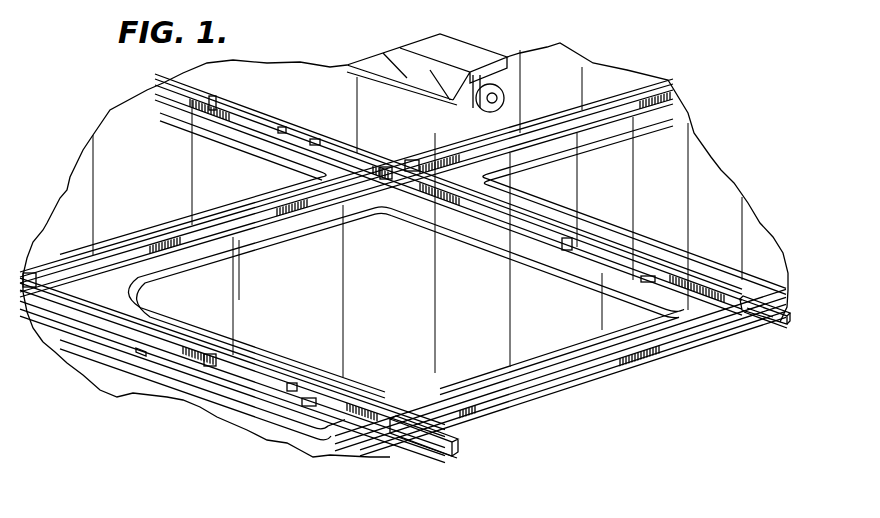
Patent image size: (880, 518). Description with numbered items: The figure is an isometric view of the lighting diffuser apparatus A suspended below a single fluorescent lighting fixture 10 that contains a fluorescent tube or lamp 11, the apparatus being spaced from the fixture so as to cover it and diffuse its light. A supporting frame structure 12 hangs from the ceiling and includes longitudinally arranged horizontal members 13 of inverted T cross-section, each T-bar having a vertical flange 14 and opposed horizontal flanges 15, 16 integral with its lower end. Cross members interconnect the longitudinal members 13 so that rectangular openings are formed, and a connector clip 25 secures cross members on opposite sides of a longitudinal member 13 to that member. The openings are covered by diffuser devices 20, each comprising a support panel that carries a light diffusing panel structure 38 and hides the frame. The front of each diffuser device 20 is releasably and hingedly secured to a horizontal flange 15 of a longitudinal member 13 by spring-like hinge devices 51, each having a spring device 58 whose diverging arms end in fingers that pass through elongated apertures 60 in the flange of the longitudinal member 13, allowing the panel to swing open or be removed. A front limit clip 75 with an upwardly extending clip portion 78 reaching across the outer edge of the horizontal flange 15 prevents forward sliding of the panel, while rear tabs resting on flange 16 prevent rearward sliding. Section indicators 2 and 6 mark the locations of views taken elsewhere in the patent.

The lighting fixture 10 is at (511, 65).
The fluorescent tube or lamp 11 is at (475, 103).
The supporting frame structure 12 is at (632, 88).
The longitudinal member 13 is at (370, 152).
The vertical flange 14 is at (447, 439).
The horizontal flange 15 is at (433, 453).
The horizontal flange 16 is at (457, 447).
The diffuser device 20 is at (601, 374).
The connector clip 25 is at (411, 159).
The light diffusing panel structure 38 is at (128, 187).
The spring-like hinge device 51 is at (140, 352).
The spring device 58 is at (284, 127).
The aperture 60 is at (318, 141).
The front limit clip 75 is at (221, 100).
The upwardly extending clip portion 78 is at (567, 248).
The section line 2 is at (672, 227).
The section line 6 is at (402, 411).
The lighting diffuser apparatus A is at (544, 400).